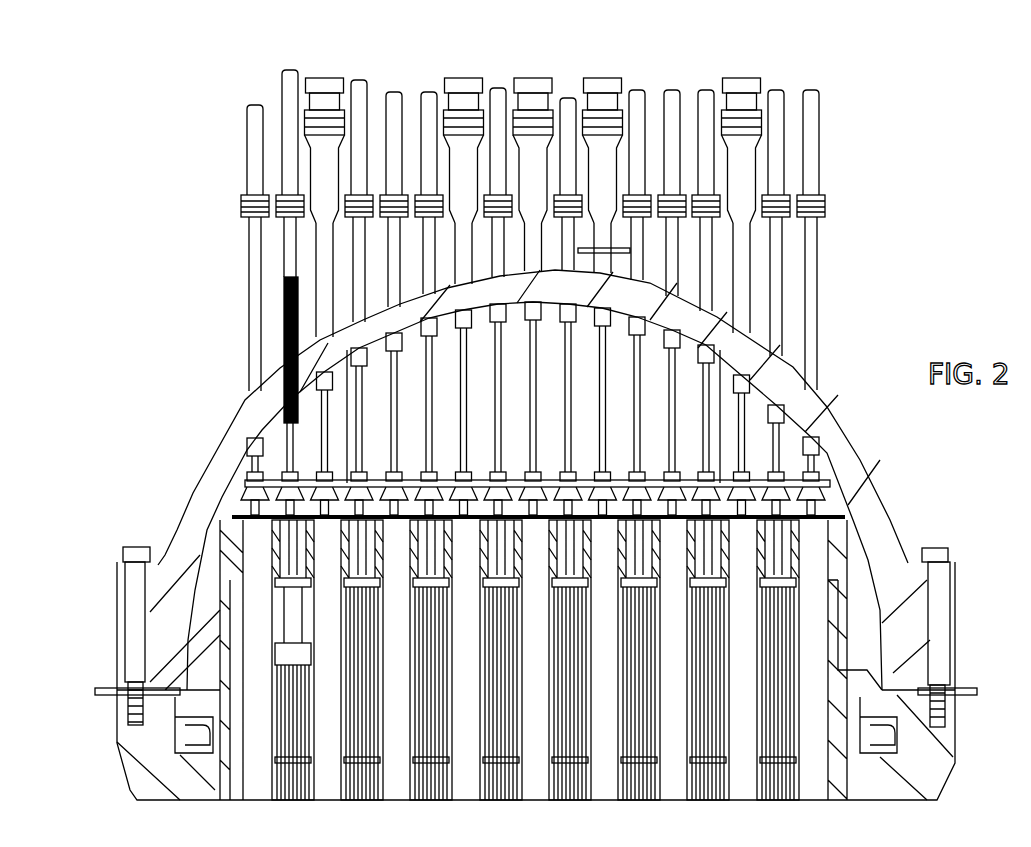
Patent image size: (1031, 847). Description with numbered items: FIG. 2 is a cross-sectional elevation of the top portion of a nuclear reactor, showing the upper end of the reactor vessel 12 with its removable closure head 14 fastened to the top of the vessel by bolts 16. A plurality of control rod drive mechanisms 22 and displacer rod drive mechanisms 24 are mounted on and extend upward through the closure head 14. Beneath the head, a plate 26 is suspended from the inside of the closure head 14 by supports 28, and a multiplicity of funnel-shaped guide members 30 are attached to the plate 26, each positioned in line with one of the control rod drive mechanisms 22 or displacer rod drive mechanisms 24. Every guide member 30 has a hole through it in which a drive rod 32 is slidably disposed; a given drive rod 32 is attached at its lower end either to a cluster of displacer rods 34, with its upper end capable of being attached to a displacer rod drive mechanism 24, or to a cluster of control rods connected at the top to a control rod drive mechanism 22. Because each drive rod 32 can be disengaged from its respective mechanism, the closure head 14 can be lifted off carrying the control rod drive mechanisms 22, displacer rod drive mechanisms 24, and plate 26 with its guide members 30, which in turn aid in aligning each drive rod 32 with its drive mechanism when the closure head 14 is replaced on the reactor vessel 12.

The reactor vessel 12 is at (123, 717).
The closure head 14 is at (180, 513).
The bolts 16 is at (122, 550).
The control rod drive mechanisms 22 is at (723, 77).
The displacer rod drive mechanisms 24 is at (258, 265).
The plate 26 is at (447, 480).
The supports 28 is at (347, 430).
The guide members 30 is at (267, 490).
The drive rod 32 is at (568, 432).
The displacer rods 34 is at (372, 683).